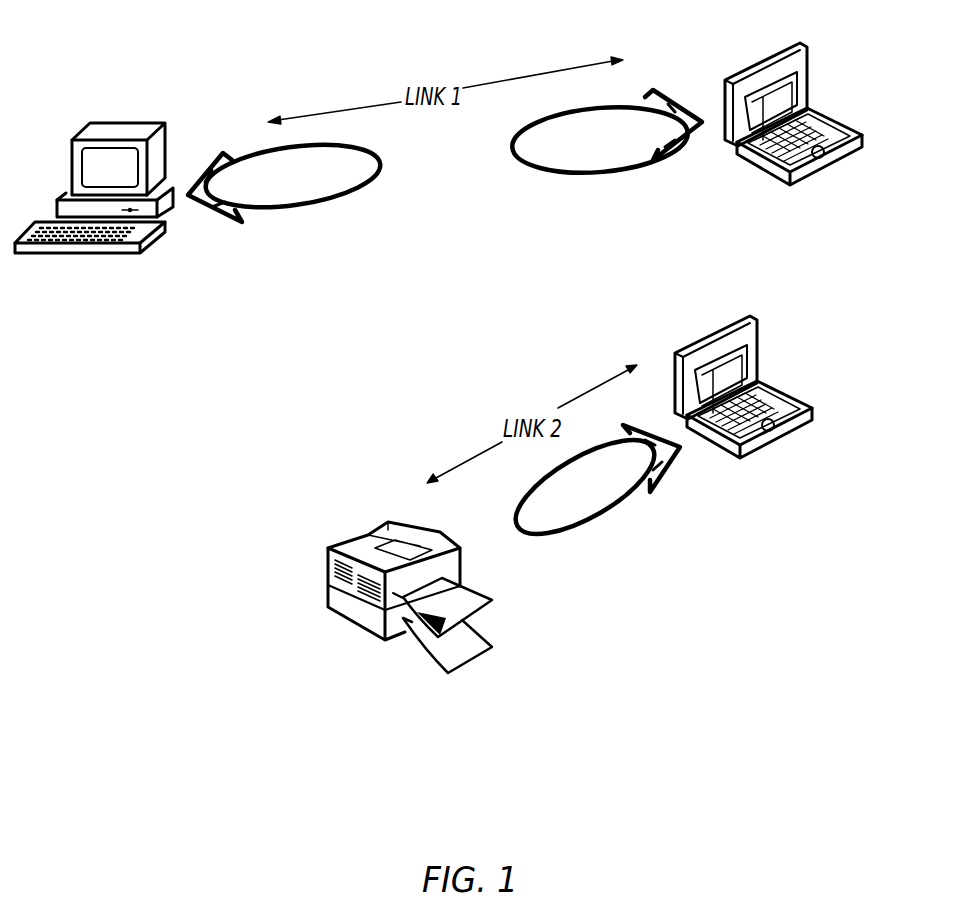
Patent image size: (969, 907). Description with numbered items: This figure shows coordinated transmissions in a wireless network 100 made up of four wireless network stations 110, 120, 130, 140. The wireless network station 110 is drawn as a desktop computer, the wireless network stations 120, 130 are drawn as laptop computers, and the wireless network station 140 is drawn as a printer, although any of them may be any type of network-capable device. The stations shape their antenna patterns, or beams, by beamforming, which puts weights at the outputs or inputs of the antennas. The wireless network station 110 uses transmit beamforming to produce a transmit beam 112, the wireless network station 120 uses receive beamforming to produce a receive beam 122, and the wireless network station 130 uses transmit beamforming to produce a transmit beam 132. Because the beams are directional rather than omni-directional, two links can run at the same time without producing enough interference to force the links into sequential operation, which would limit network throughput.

The network 100 is at (118, 682).
The wireless network station 110 is at (131, 120).
The transmit beam 112 is at (294, 214).
The wireless network station 120 is at (782, 53).
The receive beam 122 is at (561, 180).
The wireless network station 130 is at (738, 464).
The transmit beam 132 is at (607, 517).
The wireless network station 140 is at (353, 625).